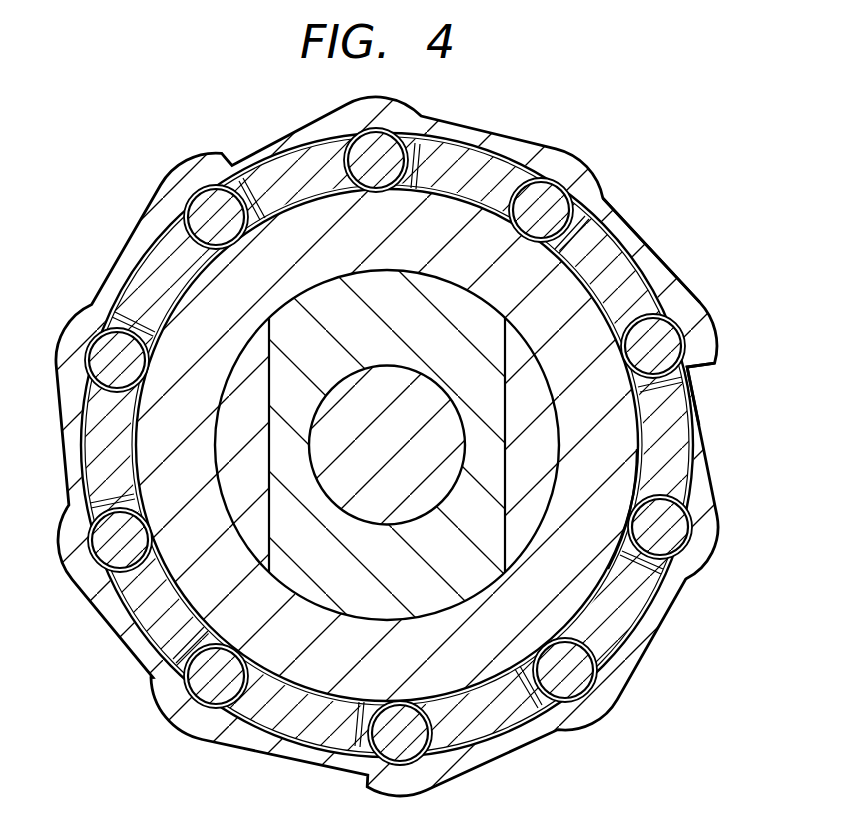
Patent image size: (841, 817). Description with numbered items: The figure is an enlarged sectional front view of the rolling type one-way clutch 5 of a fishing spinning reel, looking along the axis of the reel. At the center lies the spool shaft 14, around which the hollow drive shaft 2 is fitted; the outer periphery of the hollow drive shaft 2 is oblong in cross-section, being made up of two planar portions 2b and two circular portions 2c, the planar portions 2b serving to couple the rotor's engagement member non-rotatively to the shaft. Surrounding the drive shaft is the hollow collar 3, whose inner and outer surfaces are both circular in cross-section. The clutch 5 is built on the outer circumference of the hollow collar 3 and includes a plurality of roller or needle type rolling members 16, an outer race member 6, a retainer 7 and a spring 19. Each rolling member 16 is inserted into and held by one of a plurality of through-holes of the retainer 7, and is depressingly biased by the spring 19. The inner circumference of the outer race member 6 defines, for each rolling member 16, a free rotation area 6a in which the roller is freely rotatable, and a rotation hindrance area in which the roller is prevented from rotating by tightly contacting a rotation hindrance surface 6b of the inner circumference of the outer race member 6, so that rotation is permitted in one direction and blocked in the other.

The hollow drive shaft 2 is at (507, 413).
The planar portion 2b is at (625, 528).
The circular portion 2c is at (469, 290).
The hollow collar 3 is at (648, 459).
The one-way clutch 5 is at (612, 179).
The outer race member 6 is at (642, 233).
The free rotation area 6a is at (222, 203).
The rotation hindrance surface 6b is at (370, 150).
The retainer 7 is at (632, 289).
The spool shaft 14 is at (315, 440).
The rolling member 16 is at (662, 332).
The spring 19 is at (692, 371).